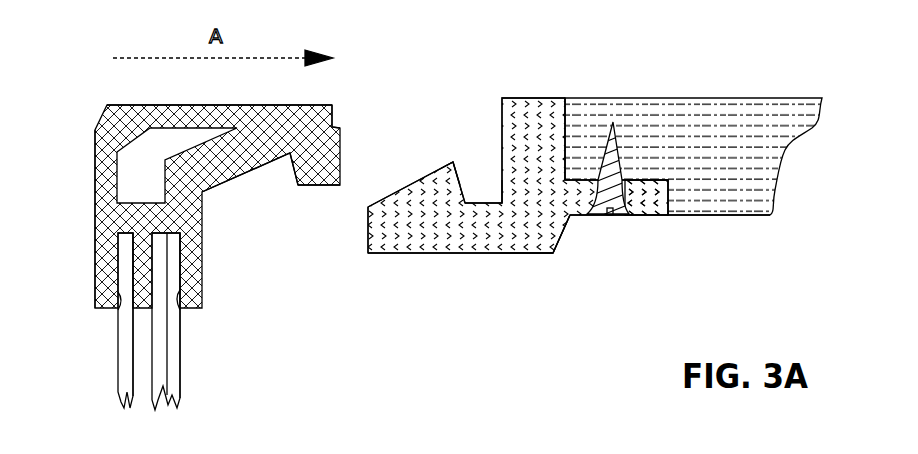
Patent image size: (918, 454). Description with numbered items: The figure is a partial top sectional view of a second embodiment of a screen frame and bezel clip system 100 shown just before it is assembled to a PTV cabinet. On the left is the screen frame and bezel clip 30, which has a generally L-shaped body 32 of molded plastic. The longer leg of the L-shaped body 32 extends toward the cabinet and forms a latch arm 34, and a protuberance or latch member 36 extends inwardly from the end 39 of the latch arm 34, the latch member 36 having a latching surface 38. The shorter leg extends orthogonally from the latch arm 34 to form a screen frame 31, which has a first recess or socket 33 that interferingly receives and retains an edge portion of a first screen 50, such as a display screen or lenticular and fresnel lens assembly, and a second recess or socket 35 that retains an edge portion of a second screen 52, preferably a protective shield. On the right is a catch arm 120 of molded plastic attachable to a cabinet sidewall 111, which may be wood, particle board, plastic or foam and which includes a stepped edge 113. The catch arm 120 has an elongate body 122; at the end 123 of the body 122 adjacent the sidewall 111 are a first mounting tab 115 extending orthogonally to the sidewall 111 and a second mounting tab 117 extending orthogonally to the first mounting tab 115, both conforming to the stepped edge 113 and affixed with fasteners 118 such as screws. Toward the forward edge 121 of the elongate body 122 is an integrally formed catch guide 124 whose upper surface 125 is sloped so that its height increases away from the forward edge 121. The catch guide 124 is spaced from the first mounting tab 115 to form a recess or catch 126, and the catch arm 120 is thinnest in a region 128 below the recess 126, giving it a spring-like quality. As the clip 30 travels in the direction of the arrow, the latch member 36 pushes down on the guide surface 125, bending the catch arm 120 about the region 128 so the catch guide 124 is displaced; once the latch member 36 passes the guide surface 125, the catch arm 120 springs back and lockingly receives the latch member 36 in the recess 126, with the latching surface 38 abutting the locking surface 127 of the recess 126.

The screen frame and bezel clip 30 is at (197, 240).
The screen frame 31 is at (93, 215).
The L-shaped body 32 is at (153, 105).
The first recess or socket 33 is at (178, 313).
The latch arm 34 is at (243, 105).
The second recess or socket 35 is at (118, 312).
The latch member 36 is at (310, 186).
The latching surface 38 is at (293, 170).
The end of latch arm 39 is at (343, 130).
The first screen 50 is at (186, 344).
The second screen 52 is at (140, 364).
The screen frame and bezel clip system 100 is at (577, 200).
The cabinet sidewall 111 is at (708, 128).
The stepped edge 113 is at (560, 122).
The first mounting tab 115 is at (512, 98).
The second mounting tab 117 is at (657, 217).
The fasteners 118 is at (625, 217).
The catch arm 120 is at (463, 258).
The forward edge 121 is at (368, 232).
The elongate body 122 is at (527, 260).
The end of body 123 is at (572, 217).
The catch guide 124 is at (440, 163).
The sloped upper surface 125 is at (387, 197).
The recess or catch 126 is at (485, 160).
The locking surface 127 is at (460, 183).
The thin region 128 is at (487, 240).